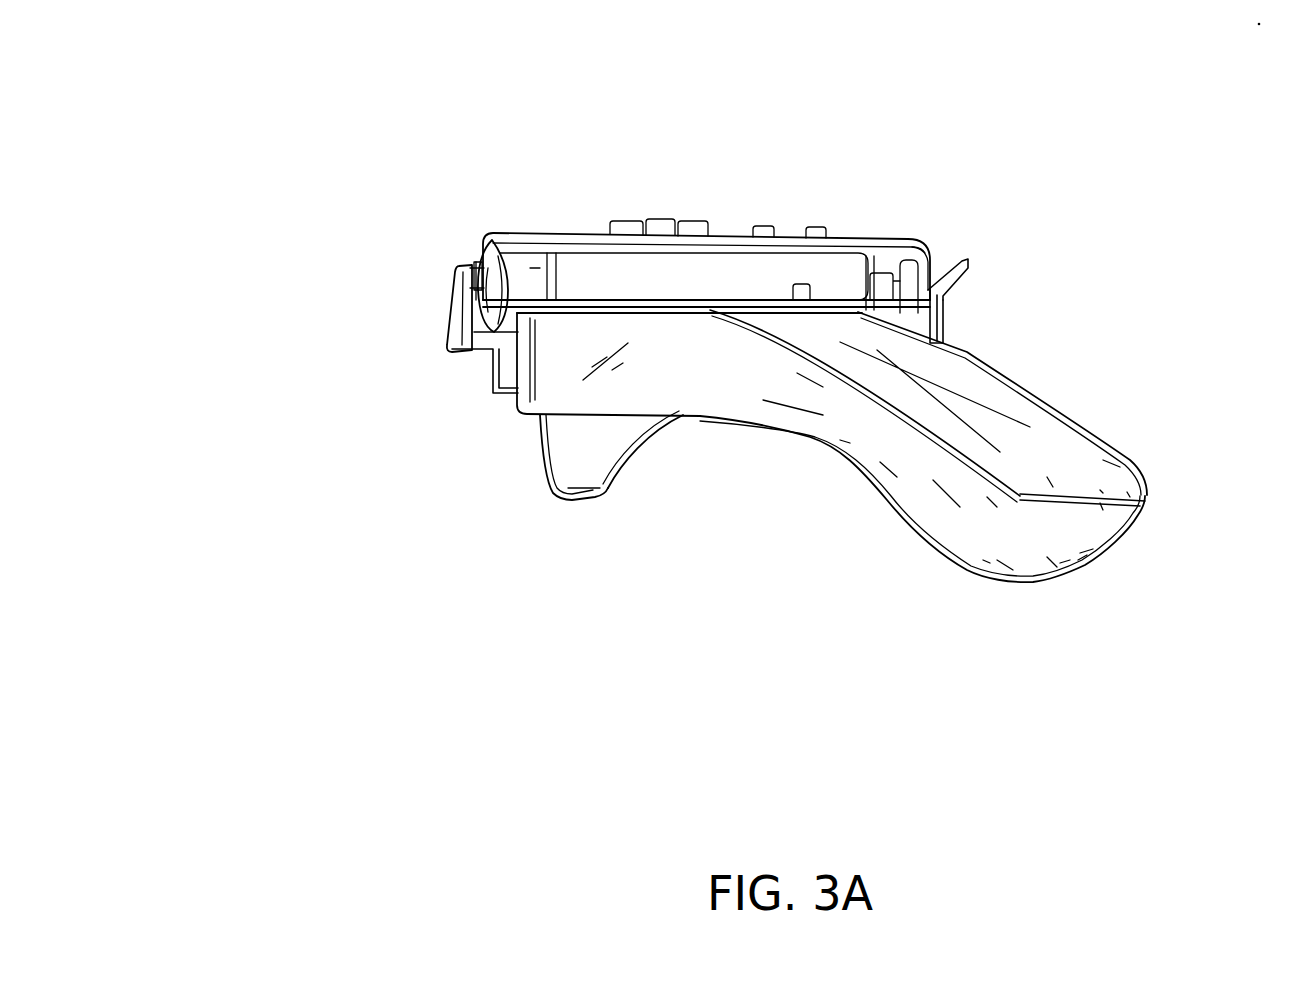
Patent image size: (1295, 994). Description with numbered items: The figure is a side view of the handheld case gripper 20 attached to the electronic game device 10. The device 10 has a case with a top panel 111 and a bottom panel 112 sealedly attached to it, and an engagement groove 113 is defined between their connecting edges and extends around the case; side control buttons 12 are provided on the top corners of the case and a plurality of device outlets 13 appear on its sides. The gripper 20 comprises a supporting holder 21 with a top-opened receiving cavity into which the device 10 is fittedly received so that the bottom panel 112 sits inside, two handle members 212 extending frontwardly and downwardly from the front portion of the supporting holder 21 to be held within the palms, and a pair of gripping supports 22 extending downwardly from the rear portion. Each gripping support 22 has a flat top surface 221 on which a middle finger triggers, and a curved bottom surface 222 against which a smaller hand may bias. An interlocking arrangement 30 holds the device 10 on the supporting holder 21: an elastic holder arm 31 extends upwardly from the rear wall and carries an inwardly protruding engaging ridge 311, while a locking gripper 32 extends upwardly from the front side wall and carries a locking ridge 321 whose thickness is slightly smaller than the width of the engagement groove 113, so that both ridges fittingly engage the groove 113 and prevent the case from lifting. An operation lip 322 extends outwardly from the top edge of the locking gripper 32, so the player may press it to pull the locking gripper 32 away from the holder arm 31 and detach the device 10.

The electronic game device 10 is at (664, 275).
The side control buttons 12 is at (520, 268).
The device outlets 13 is at (882, 270).
The top panel 111 is at (498, 251).
The bottom panel 112 is at (477, 303).
The engagement groove 113 is at (477, 262).
The handheld case gripper 20 is at (1160, 416).
The supporting holder 21 is at (740, 380).
The gripping supports 22 is at (525, 617).
The handle members 212 is at (1023, 545).
The flat top surface 221 is at (537, 455).
The curved bottom surface 222 is at (640, 458).
The interlocking arrangement 30 is at (252, 280).
The holder arm 31 is at (455, 316).
The engaging ridge 311 is at (480, 273).
The locking gripper 32 is at (940, 316).
The locking ridge 321 is at (932, 272).
The operation lip 322 is at (968, 266).